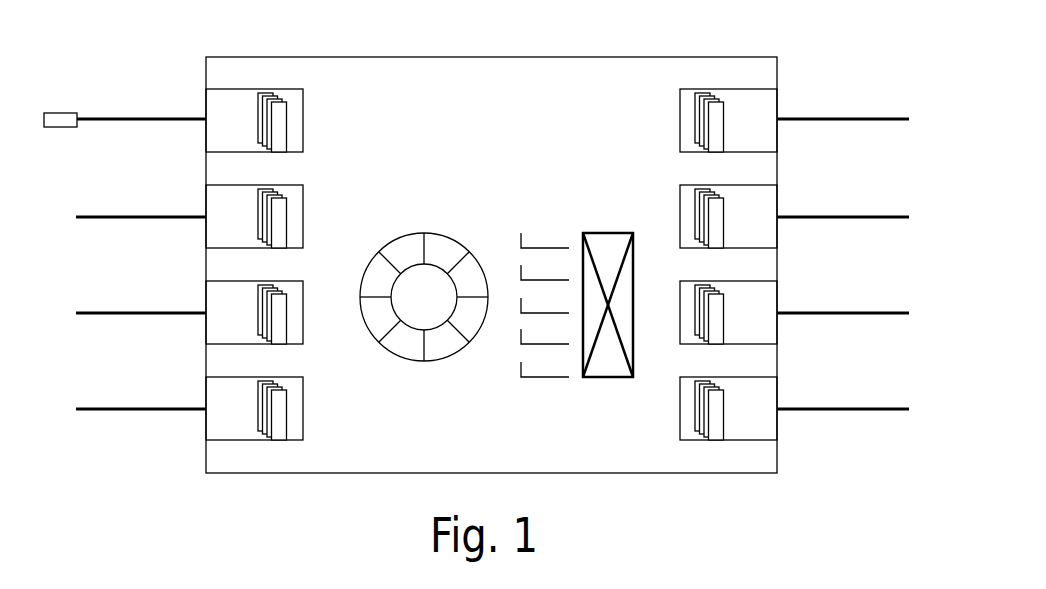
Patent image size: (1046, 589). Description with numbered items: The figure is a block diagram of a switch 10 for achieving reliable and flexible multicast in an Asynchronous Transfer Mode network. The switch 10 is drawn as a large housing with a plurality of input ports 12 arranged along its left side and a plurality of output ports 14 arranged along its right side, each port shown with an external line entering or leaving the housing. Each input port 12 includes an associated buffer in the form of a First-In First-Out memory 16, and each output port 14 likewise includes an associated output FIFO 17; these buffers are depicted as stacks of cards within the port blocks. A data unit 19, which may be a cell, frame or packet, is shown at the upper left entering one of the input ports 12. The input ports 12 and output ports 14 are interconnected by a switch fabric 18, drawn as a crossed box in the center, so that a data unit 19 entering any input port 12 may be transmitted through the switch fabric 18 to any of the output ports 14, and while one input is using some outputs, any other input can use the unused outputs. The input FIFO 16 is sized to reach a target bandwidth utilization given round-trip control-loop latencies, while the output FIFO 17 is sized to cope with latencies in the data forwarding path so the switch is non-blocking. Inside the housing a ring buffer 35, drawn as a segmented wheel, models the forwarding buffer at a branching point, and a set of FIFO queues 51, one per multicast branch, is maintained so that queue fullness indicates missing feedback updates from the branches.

The switch 10 is at (260, 57).
The input ports 12 is at (206, 101).
The output ports 14 is at (779, 102).
The FIFO memory 16 is at (281, 113).
The output FIFO 17 is at (712, 117).
The switch fabric 18 is at (630, 233).
The data unit 19 is at (60, 130).
The ring buffer 35 is at (452, 357).
The FIFO queue 51 is at (518, 236).